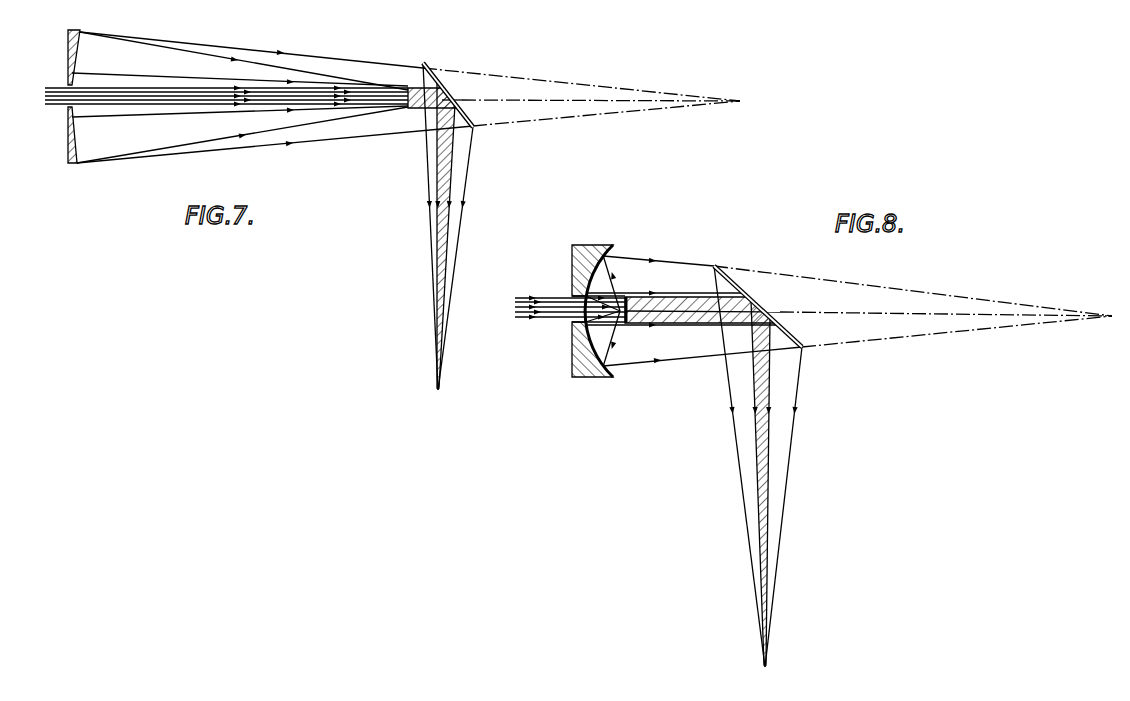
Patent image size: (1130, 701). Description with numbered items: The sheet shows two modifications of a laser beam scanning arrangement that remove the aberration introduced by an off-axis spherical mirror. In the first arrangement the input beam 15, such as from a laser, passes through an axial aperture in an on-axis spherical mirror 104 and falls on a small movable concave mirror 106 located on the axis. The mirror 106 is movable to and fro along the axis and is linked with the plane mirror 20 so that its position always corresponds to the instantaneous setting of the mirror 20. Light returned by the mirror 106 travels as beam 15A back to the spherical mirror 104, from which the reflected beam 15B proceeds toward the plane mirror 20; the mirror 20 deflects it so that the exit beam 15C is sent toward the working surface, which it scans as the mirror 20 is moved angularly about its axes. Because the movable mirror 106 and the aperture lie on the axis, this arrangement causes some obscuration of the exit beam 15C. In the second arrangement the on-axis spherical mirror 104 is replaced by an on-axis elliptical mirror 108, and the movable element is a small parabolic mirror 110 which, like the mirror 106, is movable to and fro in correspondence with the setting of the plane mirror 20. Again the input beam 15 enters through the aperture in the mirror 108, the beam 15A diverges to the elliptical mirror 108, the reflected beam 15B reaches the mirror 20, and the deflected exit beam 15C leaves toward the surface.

In FIG. 7, the input beam 15 is at (55, 88).
In FIG. 8, the input beam 15 is at (533, 320).
In FIG. 7, the beam portion 15A is at (210, 53).
In FIG. 8, the beam portion 15A is at (587, 293).
In FIG. 7, the reflected beam 15B is at (321, 55).
In FIG. 8, the reflected beam 15B is at (678, 264).
In FIG. 7, the exit beam 15C is at (452, 220).
In FIG. 8, the exit beam 15C is at (780, 447).
In FIG. 7, the plane mirror 20 is at (447, 90).
In FIG. 8, the plane mirror 20 is at (748, 295).
In FIG. 7, the on-axis spherical mirror 104 is at (77, 165).
In FIG. 7, the movable concave mirror 106 is at (407, 88).
In FIG. 8, the on-axis elliptical mirror 108 is at (573, 363).
In FIG. 8, the small parabolic mirror 110 is at (630, 320).